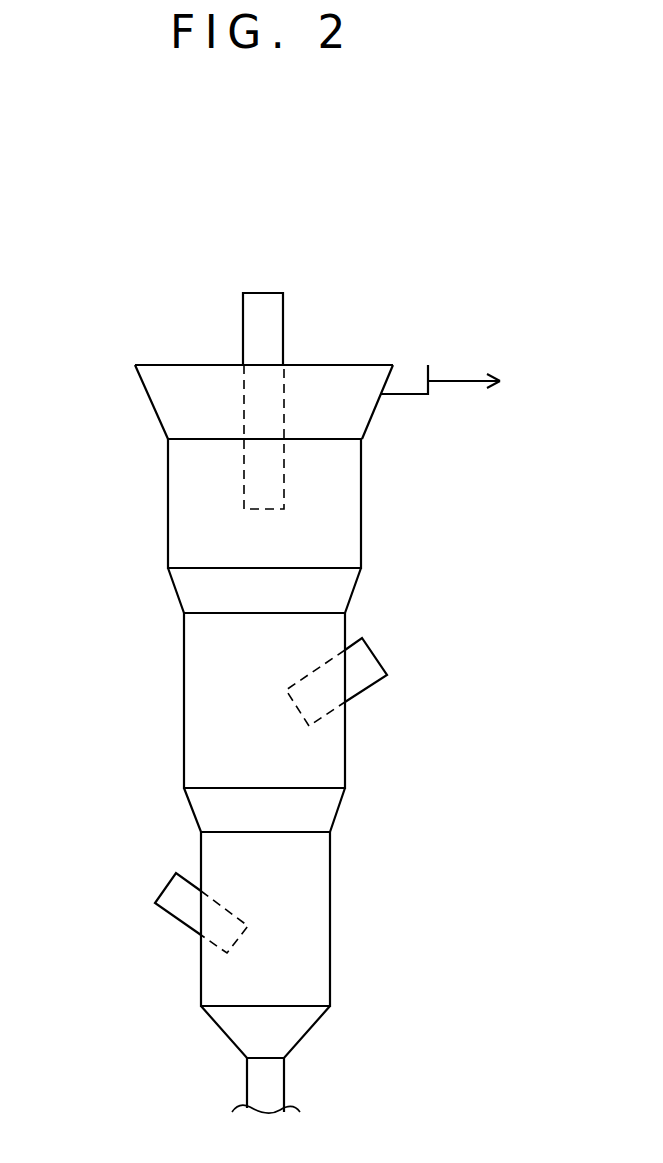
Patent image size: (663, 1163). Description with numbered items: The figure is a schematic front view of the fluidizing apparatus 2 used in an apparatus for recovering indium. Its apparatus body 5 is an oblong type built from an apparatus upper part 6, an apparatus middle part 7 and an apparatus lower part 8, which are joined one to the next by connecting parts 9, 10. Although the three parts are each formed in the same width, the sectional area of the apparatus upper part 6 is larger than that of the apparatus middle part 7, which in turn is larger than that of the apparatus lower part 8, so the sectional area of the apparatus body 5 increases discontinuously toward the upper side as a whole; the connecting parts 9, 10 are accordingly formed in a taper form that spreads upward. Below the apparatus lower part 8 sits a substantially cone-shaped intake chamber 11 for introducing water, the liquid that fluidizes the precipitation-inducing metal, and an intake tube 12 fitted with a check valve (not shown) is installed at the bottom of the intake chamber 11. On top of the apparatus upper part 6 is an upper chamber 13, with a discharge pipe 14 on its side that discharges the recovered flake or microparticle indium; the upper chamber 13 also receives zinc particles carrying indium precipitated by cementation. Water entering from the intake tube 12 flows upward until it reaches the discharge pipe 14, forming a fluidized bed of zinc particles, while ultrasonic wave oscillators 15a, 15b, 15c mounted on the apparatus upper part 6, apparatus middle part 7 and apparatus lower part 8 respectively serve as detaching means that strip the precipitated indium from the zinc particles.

The fluidizing apparatus 2 is at (125, 515).
The apparatus body 5 is at (175, 637).
The apparatus upper part 6 is at (340, 505).
The apparatus middle part 7 is at (207, 725).
The apparatus lower part 8 is at (303, 910).
The connecting part 9 is at (337, 588).
The connecting part 10 is at (317, 810).
The intake chamber 11 is at (293, 1025).
The intake tube 12 is at (255, 1085).
The upper chamber 13 is at (168, 400).
The discharge pipe 14 is at (413, 372).
The ultrasonic wave oscillator 15a is at (283, 328).
The ultrasonic wave oscillator 15b is at (377, 655).
The ultrasonic wave oscillator 15c is at (180, 912).